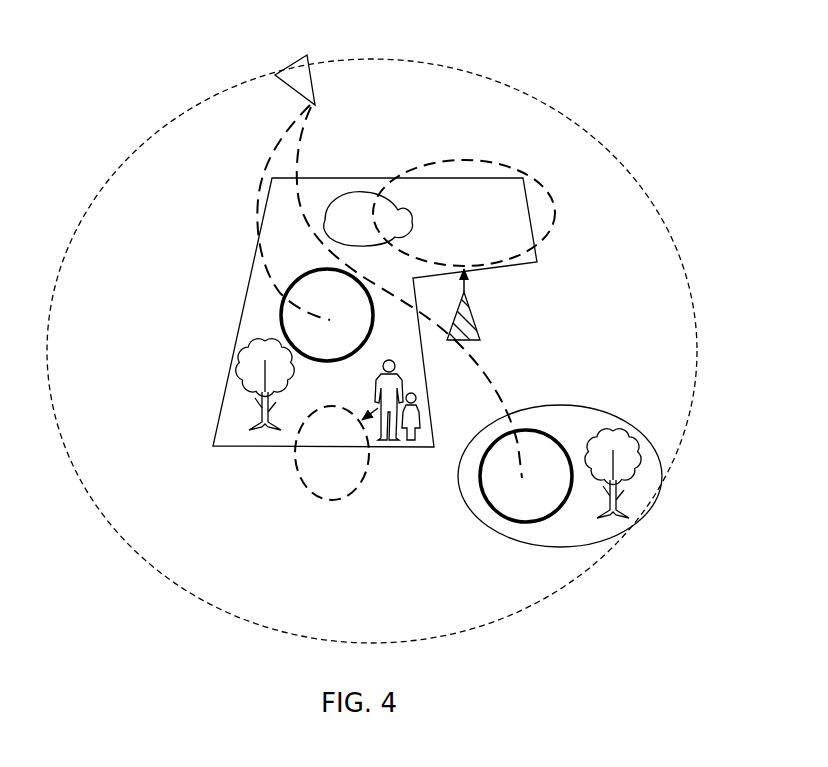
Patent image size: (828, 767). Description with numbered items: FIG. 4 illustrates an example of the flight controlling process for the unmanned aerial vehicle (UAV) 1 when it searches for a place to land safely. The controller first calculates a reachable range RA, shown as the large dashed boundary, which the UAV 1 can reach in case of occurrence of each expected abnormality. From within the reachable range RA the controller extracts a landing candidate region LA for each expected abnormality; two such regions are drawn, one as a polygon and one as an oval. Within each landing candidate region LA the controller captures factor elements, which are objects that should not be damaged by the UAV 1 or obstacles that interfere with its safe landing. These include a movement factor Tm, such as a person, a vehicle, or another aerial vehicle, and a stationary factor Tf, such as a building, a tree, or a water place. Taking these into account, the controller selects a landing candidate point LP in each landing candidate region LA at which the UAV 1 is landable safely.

The unmanned aerial vehicle (UAV) 1 is at (293, 64).
The reachable range RA is at (571, 121).
The landing candidate region LA is at (222, 399).
The landing candidate point LP is at (282, 316).
The stationary factor Tf is at (359, 192).
The movement factor Tm is at (483, 313).